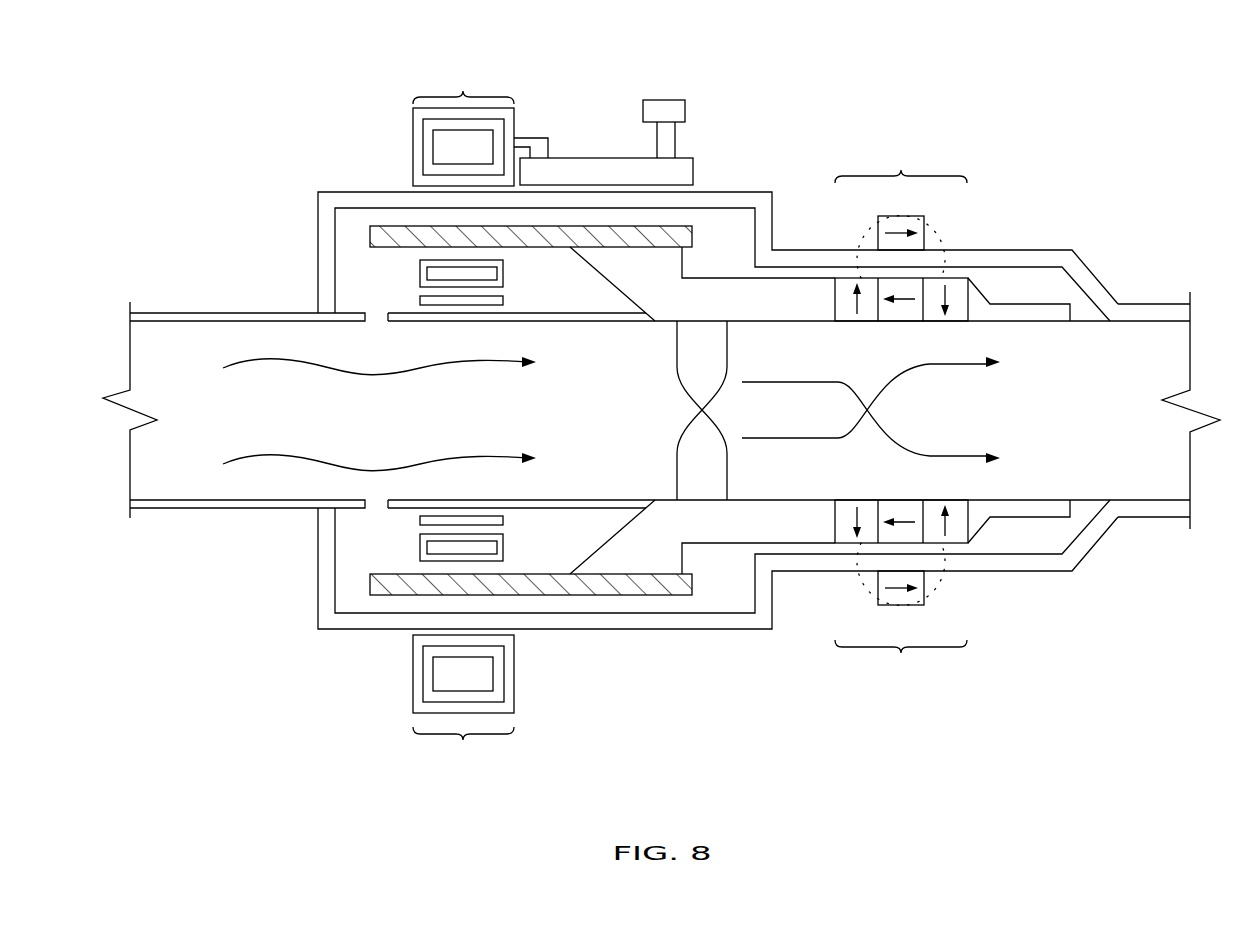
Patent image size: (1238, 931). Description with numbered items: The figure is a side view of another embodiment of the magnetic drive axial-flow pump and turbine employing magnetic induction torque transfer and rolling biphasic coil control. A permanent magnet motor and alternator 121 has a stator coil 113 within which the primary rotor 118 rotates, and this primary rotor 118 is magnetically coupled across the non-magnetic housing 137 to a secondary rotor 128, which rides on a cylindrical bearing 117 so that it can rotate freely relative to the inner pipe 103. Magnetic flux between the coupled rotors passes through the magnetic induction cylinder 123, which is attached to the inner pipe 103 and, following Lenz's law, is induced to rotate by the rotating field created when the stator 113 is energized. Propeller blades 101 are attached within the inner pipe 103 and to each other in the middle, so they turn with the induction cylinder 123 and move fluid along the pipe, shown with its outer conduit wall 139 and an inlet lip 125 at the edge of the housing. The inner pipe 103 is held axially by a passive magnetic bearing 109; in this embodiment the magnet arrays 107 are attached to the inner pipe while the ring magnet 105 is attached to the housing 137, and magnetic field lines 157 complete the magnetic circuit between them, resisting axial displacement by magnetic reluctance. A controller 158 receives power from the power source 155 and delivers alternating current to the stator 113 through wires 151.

The propeller blades 101 is at (713, 353).
The inner pipe 103 is at (728, 297).
The ring magnet 105 is at (924, 228).
The magnet arrays 107 is at (828, 280).
The passive magnetic bearing 109 is at (901, 413).
The stator coil 113 is at (413, 133).
The cylindrical bearing 117 is at (432, 300).
The primary rotor 118 is at (445, 150).
The permanent magnet motor and alternator 121 is at (463, 417).
The magnetic induction cylinder 123 is at (682, 236).
The passage inlet lip 125 is at (975, 273).
The secondary rotor 128 is at (434, 272).
The housing 137 is at (783, 258).
The conduit wall 139 is at (152, 312).
The wires 151 is at (530, 132).
The power source 155 is at (660, 99).
The magnetic field lines 157 is at (930, 232).
The controller 158 is at (586, 157).